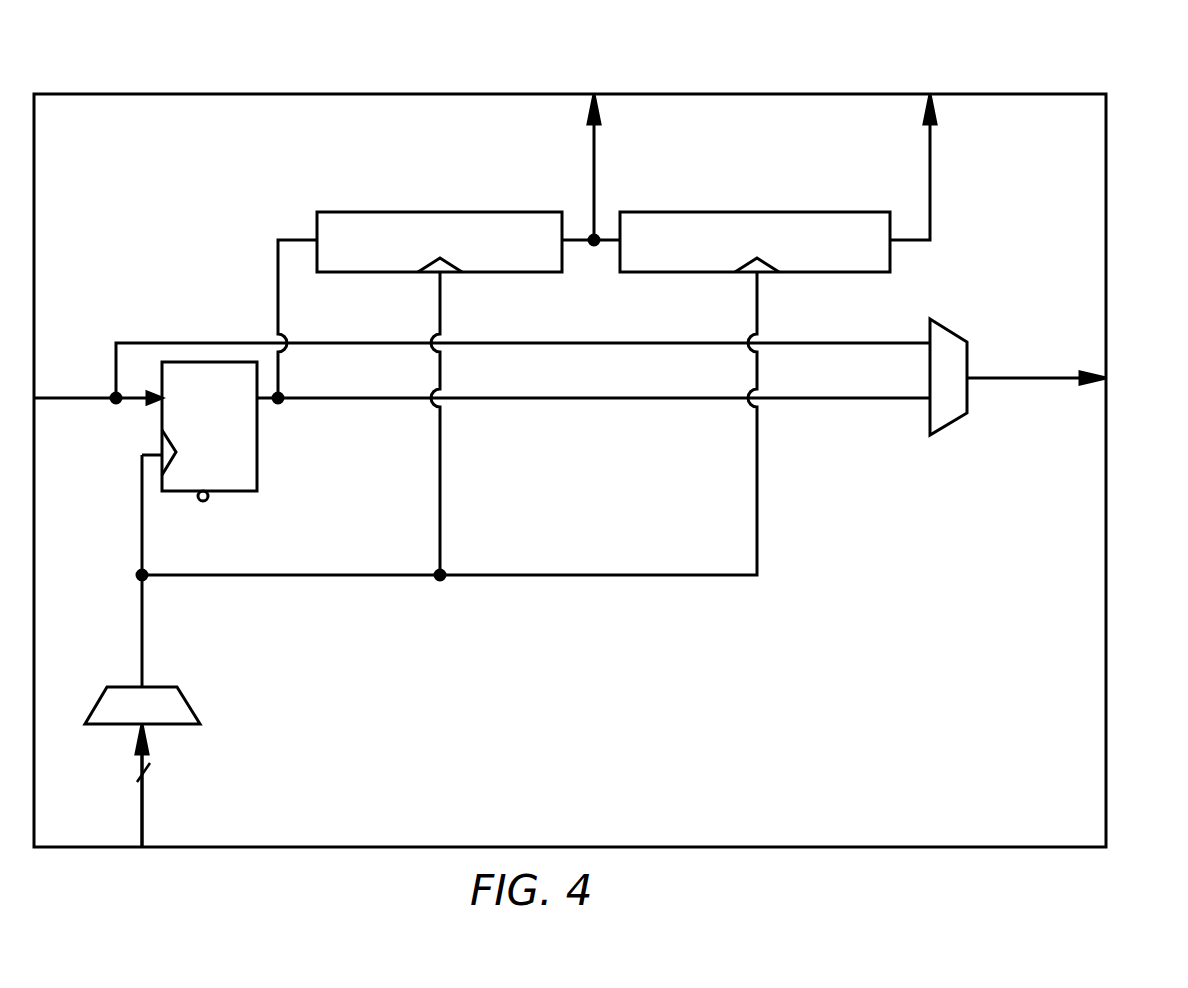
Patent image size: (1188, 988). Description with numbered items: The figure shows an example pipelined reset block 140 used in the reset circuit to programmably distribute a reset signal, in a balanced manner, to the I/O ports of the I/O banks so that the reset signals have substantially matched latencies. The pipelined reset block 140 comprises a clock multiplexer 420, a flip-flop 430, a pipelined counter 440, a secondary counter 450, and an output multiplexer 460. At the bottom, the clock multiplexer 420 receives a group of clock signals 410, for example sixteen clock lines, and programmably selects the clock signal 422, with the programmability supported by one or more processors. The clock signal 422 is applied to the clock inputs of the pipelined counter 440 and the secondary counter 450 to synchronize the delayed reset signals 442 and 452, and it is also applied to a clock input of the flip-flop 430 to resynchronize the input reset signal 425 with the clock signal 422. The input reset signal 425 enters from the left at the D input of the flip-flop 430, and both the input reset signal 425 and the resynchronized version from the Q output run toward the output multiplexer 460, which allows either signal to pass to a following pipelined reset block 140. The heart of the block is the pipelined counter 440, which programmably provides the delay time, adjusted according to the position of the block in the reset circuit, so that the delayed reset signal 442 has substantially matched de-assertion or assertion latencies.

The pipelined reset block 140 is at (1092, 90).
The group of clock signals 410 is at (142, 818).
The clock multiplexer 420 is at (190, 703).
The clock signal 422 is at (142, 637).
The input reset signal 425 is at (72, 395).
The flip-flop 430 is at (257, 448).
The pipelined counter 440 is at (513, 212).
The delayed reset signal 442 is at (594, 156).
The secondary counter 450 is at (850, 212).
The delayed reset signal 452 is at (930, 156).
The output multiplexer 460 is at (950, 330).